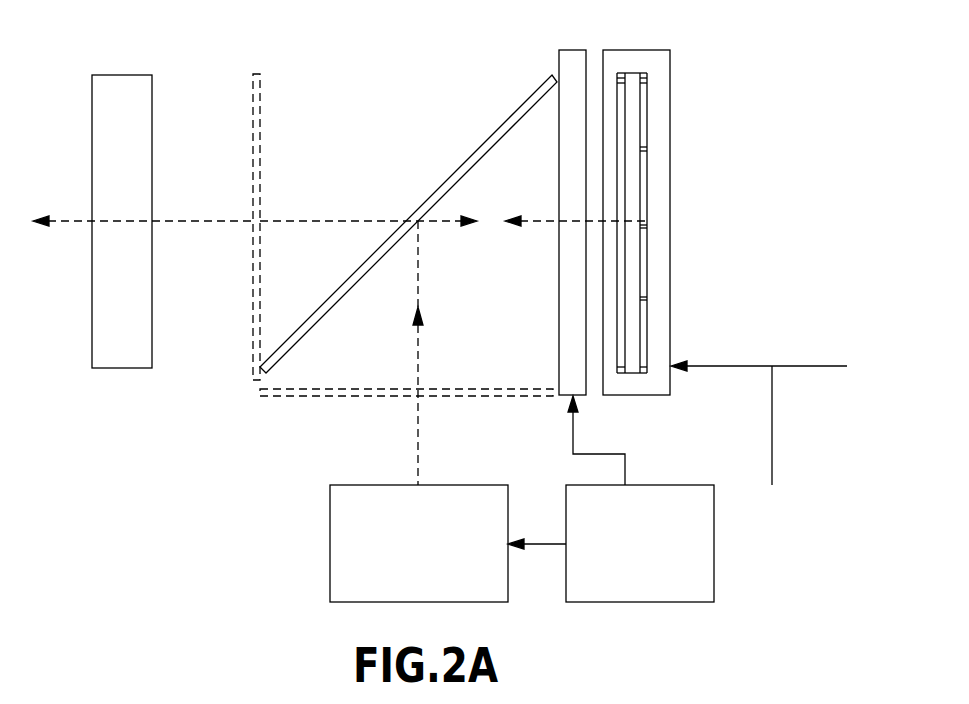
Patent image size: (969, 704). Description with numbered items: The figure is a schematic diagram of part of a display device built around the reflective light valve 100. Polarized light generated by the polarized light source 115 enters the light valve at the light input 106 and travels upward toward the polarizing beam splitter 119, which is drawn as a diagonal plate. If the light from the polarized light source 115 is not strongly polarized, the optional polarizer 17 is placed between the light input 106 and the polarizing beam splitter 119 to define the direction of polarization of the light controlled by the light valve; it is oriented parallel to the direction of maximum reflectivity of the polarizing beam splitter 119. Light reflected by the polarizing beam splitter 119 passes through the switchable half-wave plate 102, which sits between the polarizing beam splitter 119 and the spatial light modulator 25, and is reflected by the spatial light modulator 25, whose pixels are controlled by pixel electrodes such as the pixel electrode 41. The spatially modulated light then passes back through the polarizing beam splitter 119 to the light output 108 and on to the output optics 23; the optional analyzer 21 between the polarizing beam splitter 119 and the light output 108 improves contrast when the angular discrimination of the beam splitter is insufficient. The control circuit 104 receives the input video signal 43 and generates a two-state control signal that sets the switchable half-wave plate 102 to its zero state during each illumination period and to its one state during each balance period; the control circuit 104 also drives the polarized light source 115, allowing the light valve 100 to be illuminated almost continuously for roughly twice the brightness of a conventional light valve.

The polarizer 17 is at (303, 398).
The analyzer 21 is at (260, 127).
The output optics 23 is at (93, 343).
The spatial light modulator 25 is at (672, 98).
The pixel electrode 41 is at (648, 178).
The input video signal 43 is at (782, 366).
The reflective light valve 100 is at (453, 263).
The switchable half-wave plate 102 is at (556, 40).
The control circuit 104 is at (597, 602).
The light input 106 is at (400, 414).
The light output 108 is at (233, 188).
The polarized light source 115 is at (330, 544).
The polarizing beam splitter 119 is at (492, 133).